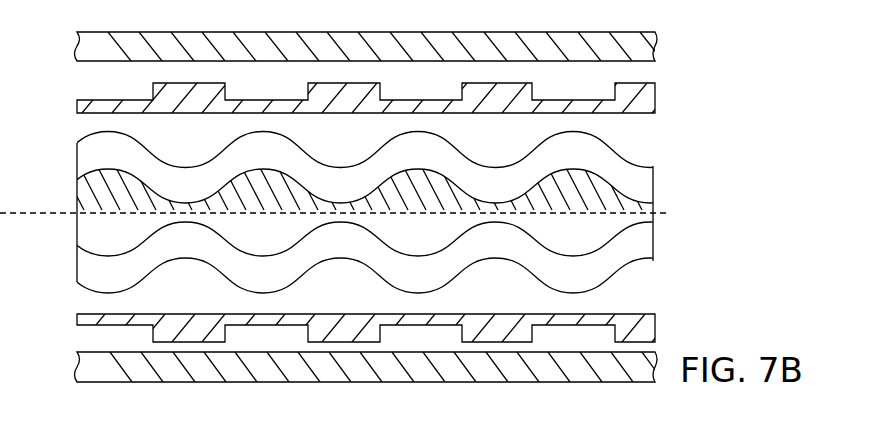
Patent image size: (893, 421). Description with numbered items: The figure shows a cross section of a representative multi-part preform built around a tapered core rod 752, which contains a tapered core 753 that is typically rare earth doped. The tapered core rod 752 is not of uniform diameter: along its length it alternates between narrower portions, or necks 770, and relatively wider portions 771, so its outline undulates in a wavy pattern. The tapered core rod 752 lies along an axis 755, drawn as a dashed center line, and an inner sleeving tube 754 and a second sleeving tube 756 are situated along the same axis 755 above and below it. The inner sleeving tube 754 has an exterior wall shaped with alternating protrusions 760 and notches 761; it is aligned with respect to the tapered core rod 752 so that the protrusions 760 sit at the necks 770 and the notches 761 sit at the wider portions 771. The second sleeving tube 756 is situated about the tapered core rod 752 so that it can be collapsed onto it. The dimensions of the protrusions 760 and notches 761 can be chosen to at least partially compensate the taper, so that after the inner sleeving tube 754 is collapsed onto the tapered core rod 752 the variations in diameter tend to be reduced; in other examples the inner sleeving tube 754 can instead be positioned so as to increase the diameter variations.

The tapered core rod 752 is at (667, 165).
The tapered core 753 is at (92, 232).
The inner sleeving tube 754 is at (655, 100).
The axis 755 is at (45, 208).
The second sleeving tube 756 is at (655, 50).
The protrusions 760 is at (185, 83).
The notches 761 is at (262, 100).
The necks 770 is at (188, 201).
The wider portions 771 is at (233, 146).